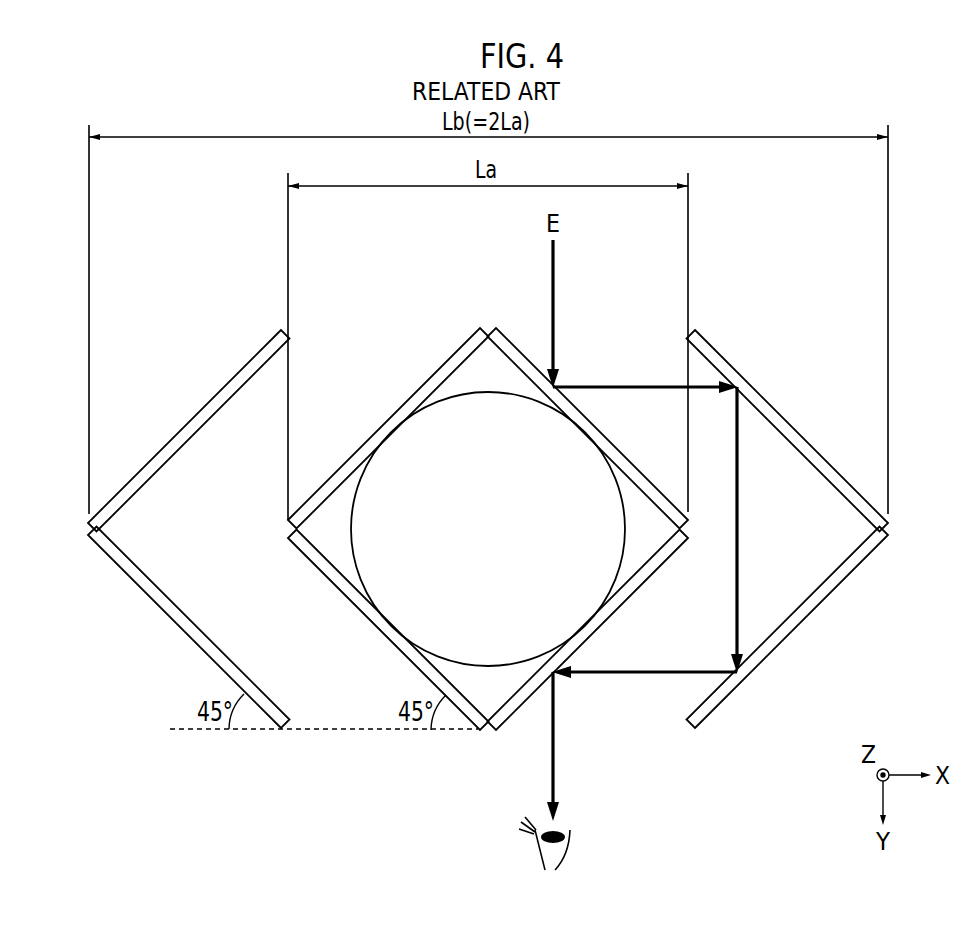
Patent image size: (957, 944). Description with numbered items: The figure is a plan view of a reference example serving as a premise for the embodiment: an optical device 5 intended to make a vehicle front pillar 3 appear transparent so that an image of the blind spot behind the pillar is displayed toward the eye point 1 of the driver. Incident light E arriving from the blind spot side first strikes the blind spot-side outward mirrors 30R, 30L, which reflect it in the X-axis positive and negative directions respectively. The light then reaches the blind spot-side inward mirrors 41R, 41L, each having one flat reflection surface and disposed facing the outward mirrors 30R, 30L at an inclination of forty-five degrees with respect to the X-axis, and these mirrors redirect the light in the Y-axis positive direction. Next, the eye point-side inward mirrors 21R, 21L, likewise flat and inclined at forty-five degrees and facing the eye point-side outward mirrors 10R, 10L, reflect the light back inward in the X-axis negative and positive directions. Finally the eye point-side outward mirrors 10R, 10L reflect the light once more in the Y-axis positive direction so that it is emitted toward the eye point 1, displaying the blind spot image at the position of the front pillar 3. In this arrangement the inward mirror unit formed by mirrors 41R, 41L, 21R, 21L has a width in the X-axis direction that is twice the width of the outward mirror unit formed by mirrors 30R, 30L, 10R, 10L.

The eye point 1 is at (565, 858).
The front pillar 3 is at (497, 541).
The optical device 5 is at (302, 785).
The eye point-side outward mirror 10L is at (462, 710).
The eye point-side outward mirror 10R is at (514, 710).
The blind spot-side outward mirror 30L is at (462, 347).
The blind spot-side outward mirror 30R is at (512, 346).
The blind spot-side inward mirror 41L is at (263, 365).
The blind spot-side inward mirror 41R is at (702, 360).
The eye point-side inward mirror 21L is at (282, 707).
The eye point-side inward mirror 21R is at (701, 707).